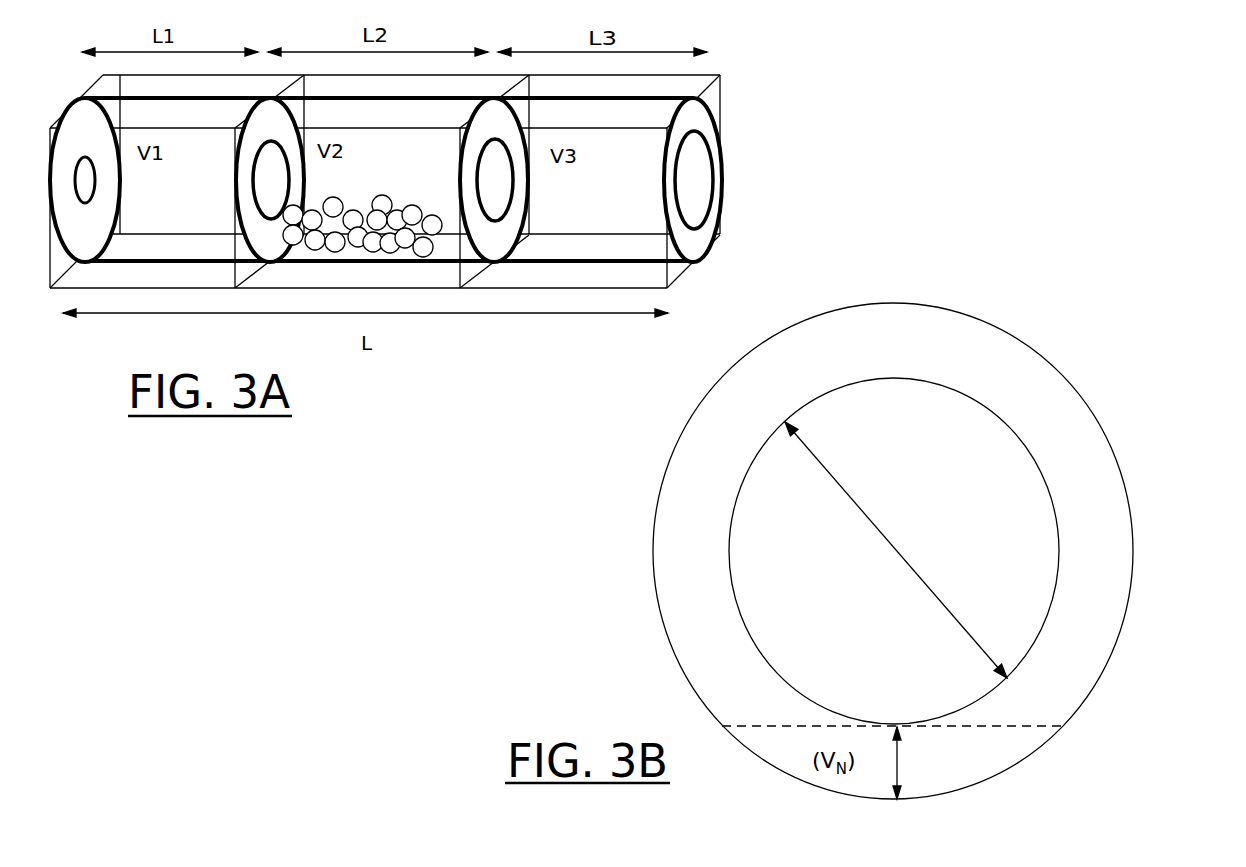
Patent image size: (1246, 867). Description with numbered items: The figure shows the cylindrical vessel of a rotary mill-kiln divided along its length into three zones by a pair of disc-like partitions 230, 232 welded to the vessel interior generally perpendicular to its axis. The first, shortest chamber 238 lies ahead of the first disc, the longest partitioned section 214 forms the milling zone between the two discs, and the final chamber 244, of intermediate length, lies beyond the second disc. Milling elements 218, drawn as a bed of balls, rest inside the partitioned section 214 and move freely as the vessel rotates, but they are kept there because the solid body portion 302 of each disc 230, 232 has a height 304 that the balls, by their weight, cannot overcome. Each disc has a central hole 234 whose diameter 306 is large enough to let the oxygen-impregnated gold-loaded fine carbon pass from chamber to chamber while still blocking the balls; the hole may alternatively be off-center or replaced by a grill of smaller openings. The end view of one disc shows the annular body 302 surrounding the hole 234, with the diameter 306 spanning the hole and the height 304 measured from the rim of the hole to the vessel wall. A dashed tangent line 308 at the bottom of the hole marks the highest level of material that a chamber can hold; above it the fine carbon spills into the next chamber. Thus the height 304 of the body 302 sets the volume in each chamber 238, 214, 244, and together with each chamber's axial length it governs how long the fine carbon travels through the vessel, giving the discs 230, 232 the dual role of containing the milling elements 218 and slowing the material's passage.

In FIG. 3A, the partitioned section 214 is at (412, 161).
In FIG. 3A, the milling elements 218 is at (427, 210).
In FIG. 3A, the partition 230 is at (246, 207).
In FIG. 3B, the partition 230 is at (940, 551).
In FIG. 3A, the partition 232 is at (500, 236).
In FIG. 3B, the partition 232 is at (940, 551).
In FIG. 3B, the hole 234 is at (814, 568).
In FIG. 3A, the first chamber 238 is at (169, 213).
In FIG. 3A, the final chamber 244 is at (649, 178).
In FIG. 3B, the solid body portion 302 is at (1112, 578).
In FIG. 3B, the height 304 is at (898, 753).
In FIG. 3B, the diameter 306 is at (890, 543).
In FIG. 3B, the tangent line 308 is at (1012, 725).